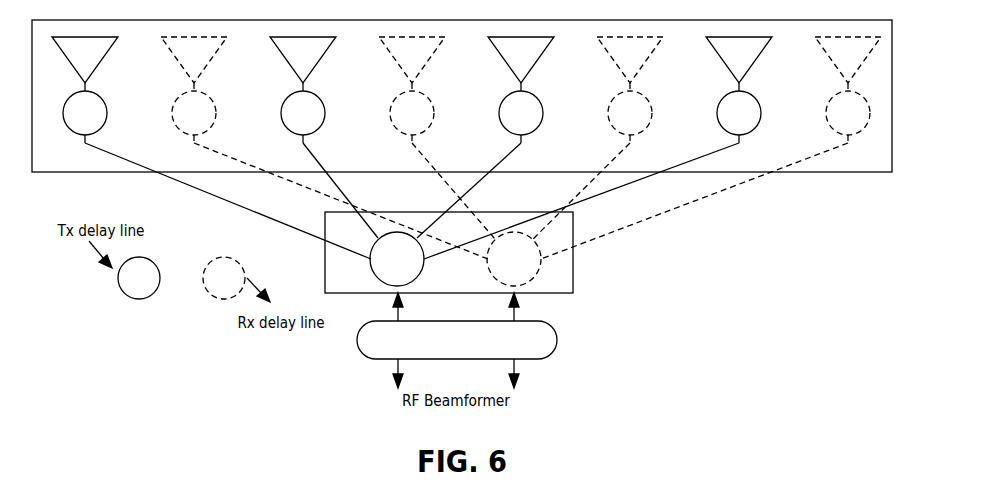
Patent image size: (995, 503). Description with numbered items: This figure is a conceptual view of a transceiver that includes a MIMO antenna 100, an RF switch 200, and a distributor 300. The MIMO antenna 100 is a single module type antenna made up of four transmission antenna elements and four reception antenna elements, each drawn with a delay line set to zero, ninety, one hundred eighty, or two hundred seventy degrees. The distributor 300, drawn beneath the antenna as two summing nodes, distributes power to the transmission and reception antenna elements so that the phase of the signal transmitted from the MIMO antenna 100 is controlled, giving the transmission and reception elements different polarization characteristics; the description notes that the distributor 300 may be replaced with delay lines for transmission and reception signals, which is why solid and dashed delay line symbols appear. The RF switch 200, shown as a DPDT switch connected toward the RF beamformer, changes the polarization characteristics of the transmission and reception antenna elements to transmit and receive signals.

The MIMO antenna 100 is at (848, 172).
The RF switch 200 is at (557, 340).
The distributor 300 is at (573, 276).